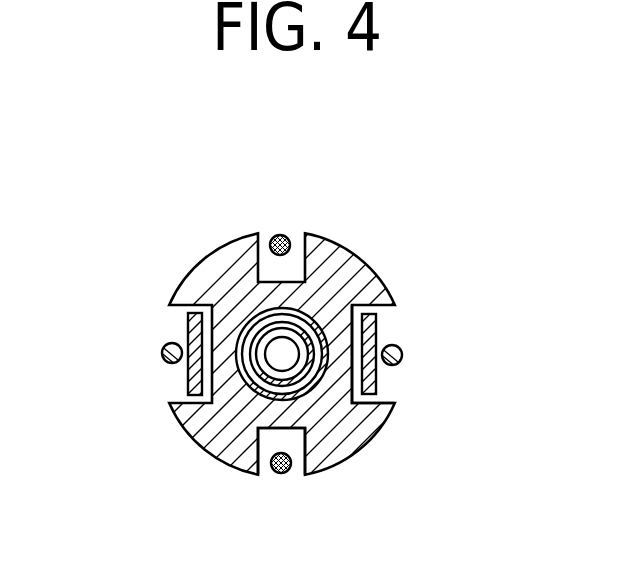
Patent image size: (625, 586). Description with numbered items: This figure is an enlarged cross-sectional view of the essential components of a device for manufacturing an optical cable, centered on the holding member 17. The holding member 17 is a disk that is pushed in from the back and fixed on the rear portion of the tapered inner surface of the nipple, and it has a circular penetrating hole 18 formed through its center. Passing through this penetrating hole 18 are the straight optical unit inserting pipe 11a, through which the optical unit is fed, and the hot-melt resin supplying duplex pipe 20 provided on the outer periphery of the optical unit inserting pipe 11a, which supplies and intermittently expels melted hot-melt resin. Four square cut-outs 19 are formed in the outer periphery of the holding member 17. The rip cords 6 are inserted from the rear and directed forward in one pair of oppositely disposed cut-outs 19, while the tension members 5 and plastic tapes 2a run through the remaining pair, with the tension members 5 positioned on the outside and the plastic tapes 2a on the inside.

The plastic tapes 2a is at (189, 321).
The tension members 5 is at (162, 354).
The rip cords 6 is at (278, 235).
The optical unit inserting pipe 11a is at (297, 384).
The holding member 17 is at (380, 251).
The penetrating hole 18 is at (303, 323).
The cut-outs 19 is at (392, 404).
The hot-melt resin supplying duplex pipe 20 is at (231, 385).